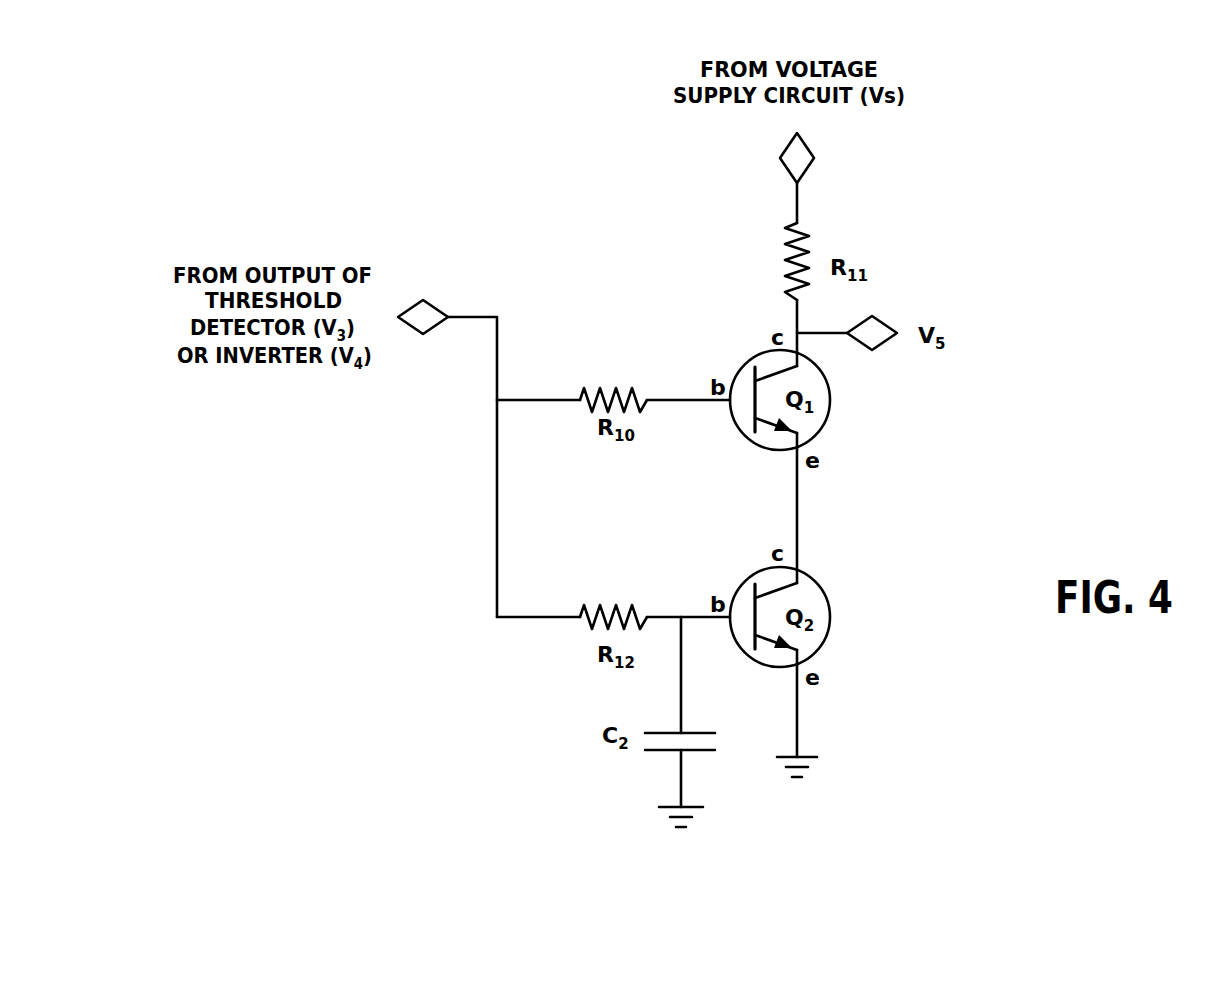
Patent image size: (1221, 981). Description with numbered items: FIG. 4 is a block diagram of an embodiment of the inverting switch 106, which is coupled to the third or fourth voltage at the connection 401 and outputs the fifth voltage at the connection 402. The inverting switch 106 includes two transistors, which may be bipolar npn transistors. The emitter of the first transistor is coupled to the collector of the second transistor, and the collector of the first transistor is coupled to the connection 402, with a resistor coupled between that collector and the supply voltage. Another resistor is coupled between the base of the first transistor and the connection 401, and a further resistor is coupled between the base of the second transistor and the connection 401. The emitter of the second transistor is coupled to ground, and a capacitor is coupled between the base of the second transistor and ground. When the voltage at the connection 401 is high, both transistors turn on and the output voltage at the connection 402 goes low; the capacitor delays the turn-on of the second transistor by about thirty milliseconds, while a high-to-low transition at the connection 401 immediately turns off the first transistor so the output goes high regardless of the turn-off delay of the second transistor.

The inverting switch 106 is at (1064, 94).
The connection 401 is at (423, 300).
The connection 402 is at (872, 320).